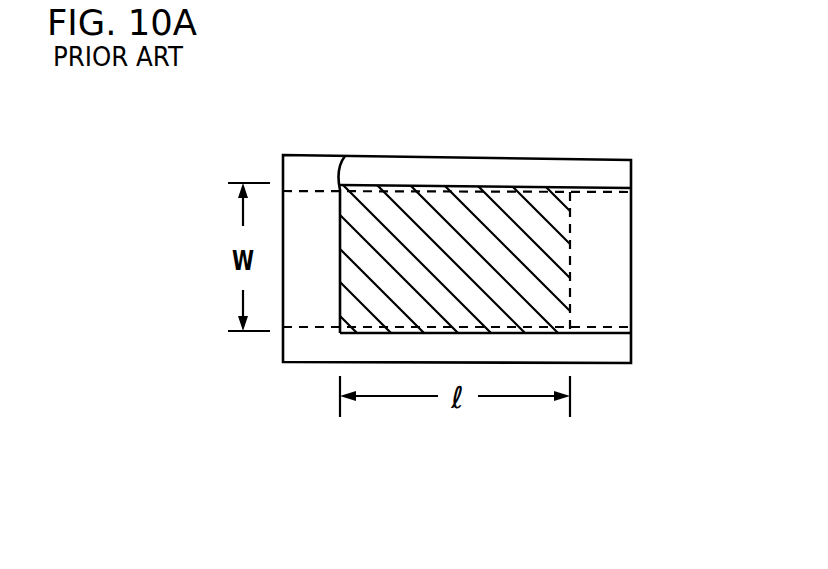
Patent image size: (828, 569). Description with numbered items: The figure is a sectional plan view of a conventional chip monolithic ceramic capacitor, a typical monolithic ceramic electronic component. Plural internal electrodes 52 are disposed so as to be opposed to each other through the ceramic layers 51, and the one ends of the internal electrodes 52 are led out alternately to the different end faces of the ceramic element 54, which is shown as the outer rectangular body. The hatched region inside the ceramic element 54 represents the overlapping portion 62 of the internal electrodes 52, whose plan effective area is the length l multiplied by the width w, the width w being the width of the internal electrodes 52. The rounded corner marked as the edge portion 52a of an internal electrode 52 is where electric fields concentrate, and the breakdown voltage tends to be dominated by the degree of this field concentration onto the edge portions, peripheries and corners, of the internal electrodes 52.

The ceramic layer 51 is at (309, 177).
The internal electrode 52 is at (606, 187).
The edge portion of internal electrode 52a is at (440, 185).
The ceramic element 54 is at (453, 141).
The overlapping portion of internal electrodes 62 is at (530, 212).